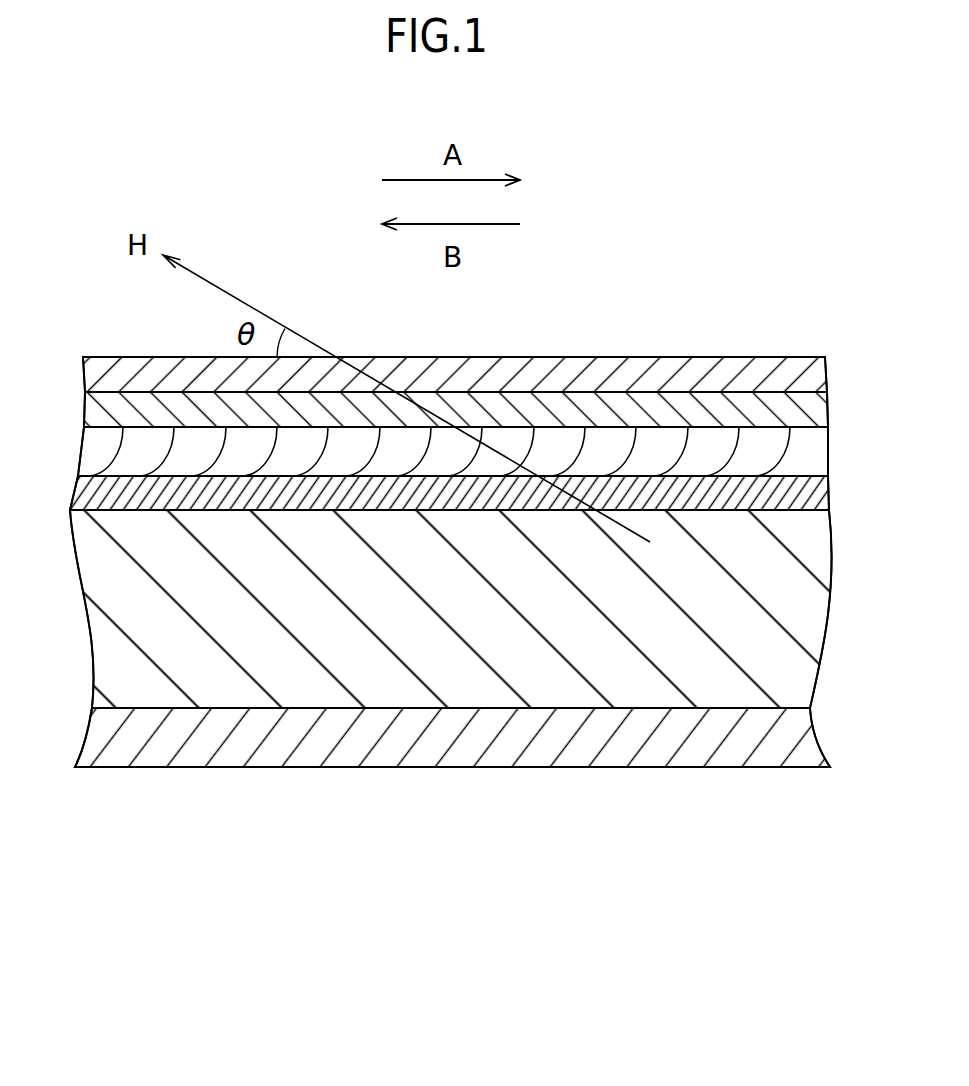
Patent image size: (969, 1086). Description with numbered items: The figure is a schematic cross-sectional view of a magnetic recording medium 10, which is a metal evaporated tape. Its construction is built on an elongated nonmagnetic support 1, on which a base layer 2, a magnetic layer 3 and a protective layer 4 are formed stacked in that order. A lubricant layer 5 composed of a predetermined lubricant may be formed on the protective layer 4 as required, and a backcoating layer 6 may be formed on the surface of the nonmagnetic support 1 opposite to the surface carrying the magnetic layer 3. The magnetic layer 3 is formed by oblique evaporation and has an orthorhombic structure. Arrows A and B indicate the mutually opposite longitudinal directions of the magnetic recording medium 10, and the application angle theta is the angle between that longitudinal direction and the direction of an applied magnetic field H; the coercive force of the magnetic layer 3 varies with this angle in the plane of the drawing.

The nonmagnetic support 1 is at (808, 612).
The base layer 2 is at (808, 495).
The magnetic layer 3 is at (808, 456).
The protective layer 4 is at (808, 416).
The lubricant layer 5 is at (818, 383).
The backcoating layer 6 is at (808, 745).
The magnetic recording medium 10 is at (725, 835).